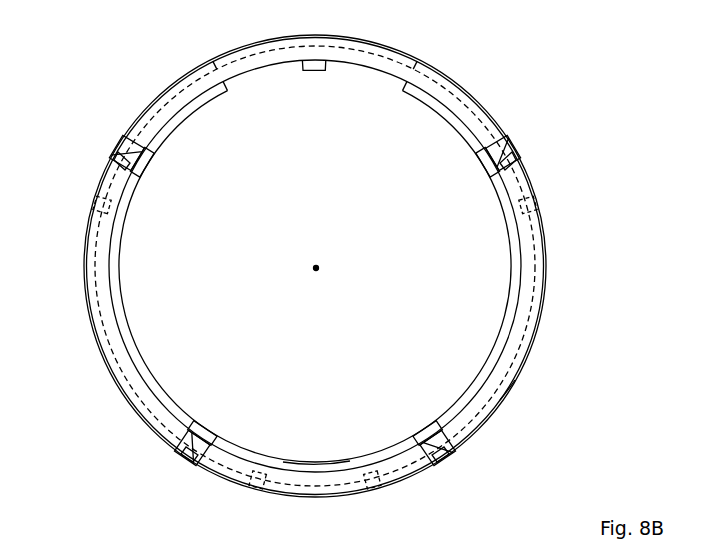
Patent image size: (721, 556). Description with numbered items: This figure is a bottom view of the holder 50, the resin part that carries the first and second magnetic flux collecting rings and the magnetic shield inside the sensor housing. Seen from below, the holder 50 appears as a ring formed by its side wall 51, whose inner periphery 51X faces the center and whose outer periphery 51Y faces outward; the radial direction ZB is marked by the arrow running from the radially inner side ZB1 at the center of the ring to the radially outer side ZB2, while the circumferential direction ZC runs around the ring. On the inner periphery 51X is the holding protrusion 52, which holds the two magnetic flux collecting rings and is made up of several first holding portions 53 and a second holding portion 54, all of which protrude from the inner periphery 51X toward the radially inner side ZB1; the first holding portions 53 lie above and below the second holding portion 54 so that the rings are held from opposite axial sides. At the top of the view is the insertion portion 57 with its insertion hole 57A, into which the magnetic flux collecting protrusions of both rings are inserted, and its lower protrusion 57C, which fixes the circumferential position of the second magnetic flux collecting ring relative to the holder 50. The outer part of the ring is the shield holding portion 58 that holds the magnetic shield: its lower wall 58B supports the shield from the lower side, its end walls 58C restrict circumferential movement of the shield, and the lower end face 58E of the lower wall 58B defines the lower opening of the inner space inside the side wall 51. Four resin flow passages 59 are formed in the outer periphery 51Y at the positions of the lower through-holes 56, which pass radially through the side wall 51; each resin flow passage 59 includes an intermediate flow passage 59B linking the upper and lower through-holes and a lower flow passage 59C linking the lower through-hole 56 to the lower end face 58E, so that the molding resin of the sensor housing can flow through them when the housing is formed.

The holder 50 is at (107, 62).
The side wall 51 is at (542, 341).
The inner periphery of the side wall 51X is at (516, 268).
The outer periphery of the side wall 51Y is at (546, 268).
The holding protrusion 52 is at (259, 407).
The first holding portion 53 is at (150, 166).
The second holding portion 54 is at (283, 461).
The lower through-hole 56 is at (97, 204).
The insertion portion 57 is at (287, 33).
The insertion hole 57A is at (390, 82).
The lower protrusion 57C is at (317, 71).
The shield holding portion 58 is at (450, 61).
The lower wall 58B is at (516, 382).
The end wall 58C is at (226, 63).
The lower end face of the lower wall 58E is at (95, 272).
The resin flow passage 59 is at (114, 132).
The intermediate flow passage 59B is at (122, 154).
The lower flow passage 59C is at (116, 168).
The radial direction ZB is at (443, 360).
The radially inner side ZB1 is at (339, 278).
The radially outer side ZB2 is at (447, 378).
The circumferential direction ZC is at (62, 393).